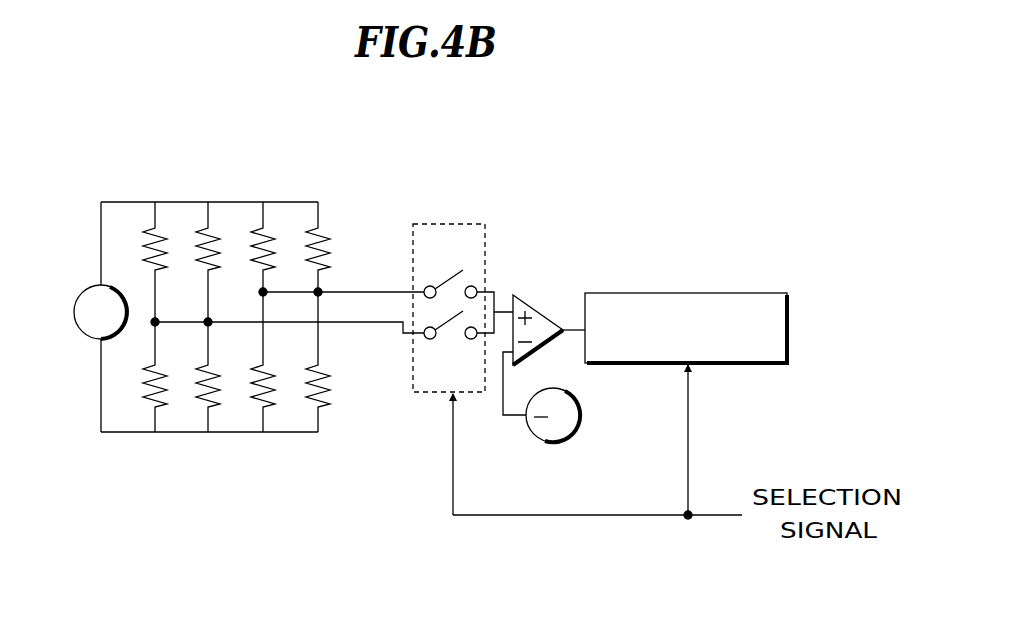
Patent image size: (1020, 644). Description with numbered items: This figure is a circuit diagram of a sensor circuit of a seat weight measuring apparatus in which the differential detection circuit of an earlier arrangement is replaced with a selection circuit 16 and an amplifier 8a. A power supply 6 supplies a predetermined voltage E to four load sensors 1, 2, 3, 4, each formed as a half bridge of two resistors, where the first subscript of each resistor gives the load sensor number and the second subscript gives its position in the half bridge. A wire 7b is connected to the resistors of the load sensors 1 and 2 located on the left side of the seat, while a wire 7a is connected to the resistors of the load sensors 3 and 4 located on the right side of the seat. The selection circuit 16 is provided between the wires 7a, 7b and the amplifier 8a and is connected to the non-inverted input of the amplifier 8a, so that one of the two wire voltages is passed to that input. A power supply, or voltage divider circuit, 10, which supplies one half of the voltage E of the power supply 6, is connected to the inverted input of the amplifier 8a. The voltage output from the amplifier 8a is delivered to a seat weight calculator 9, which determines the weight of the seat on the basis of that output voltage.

The load sensor 1 is at (153, 193).
The load sensor 2 is at (208, 193).
The load sensor 3 is at (263, 193).
The load sensor 4 is at (318, 193).
The power supply 6 is at (92, 291).
The wire 7a is at (345, 291).
The wire 7b is at (353, 322).
The amplifier 8a is at (532, 302).
The seat weight calculator 9 is at (655, 293).
The power supply (voltage divider circuit) 10 is at (580, 415).
The selection circuit 16 is at (457, 224).